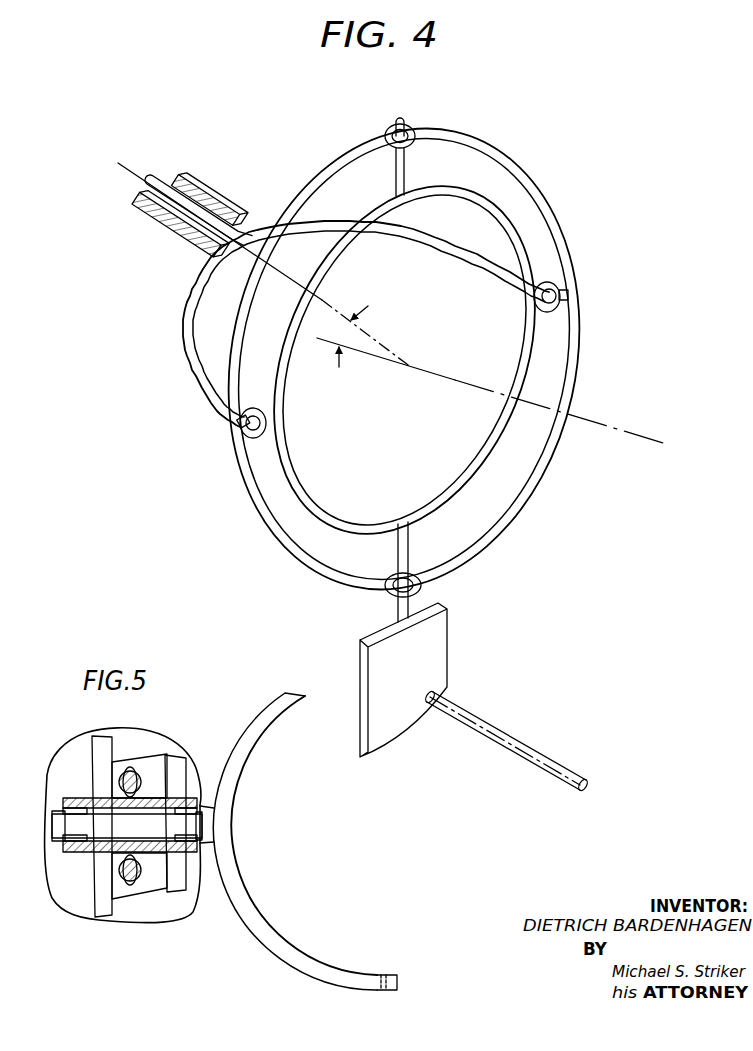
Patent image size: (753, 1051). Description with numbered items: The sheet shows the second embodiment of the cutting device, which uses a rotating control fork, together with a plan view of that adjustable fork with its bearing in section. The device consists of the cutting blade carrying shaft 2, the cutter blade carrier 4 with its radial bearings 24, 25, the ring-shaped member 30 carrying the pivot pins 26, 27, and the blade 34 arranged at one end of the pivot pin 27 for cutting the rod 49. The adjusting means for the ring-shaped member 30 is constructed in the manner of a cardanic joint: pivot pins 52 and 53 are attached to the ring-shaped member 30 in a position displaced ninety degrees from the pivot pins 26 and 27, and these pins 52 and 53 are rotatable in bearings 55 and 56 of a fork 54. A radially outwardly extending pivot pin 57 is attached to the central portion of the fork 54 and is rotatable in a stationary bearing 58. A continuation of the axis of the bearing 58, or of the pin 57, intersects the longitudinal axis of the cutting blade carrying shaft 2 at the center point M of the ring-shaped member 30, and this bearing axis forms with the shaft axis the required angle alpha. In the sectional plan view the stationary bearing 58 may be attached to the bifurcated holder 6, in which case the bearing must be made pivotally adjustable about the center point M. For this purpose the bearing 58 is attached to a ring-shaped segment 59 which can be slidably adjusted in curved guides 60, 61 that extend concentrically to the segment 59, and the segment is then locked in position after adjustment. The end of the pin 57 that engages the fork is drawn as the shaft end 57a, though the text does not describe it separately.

In FIG. 4, the cutting blade carrying shaft 2 is at (633, 432).
In FIG. 4, the cutter blade carrier 4 is at (522, 498).
In FIG. 5, the bifurcated holder 6 is at (80, 747).
In FIG. 4, the radial bearing 24 is at (409, 128).
In FIG. 4, the radial bearing 25 is at (392, 597).
In FIG. 4, the pivot pin 26 is at (398, 173).
In FIG. 4, the pivot pin 27 is at (407, 547).
In FIG. 4, the ring-shaped member 30 is at (294, 496).
In FIG. 4, the blade 34 is at (372, 693).
In FIG. 4, the rod 49 is at (540, 746).
In FIG. 4, the pivot pin 52 is at (246, 429).
In FIG. 4, the pivot pin 53 is at (570, 296).
In FIG. 4, the fork 54 is at (183, 347).
In FIG. 5, the fork 54 is at (236, 872).
In FIG. 4, the bearing 55 is at (267, 409).
In FIG. 5, the bearing 55 is at (382, 990).
In FIG. 4, the bearing 56 is at (546, 312).
In FIG. 4, the pivot pin 57 is at (247, 233).
In FIG. 5, the pivot pin 57 is at (97, 820).
In FIG. 5, the shaft end 57a is at (212, 820).
In FIG. 4, the stationary bearing 58 is at (212, 198).
In FIG. 5, the stationary bearing 58 is at (177, 800).
In FIG. 5, the ring-shaped segment 59 is at (115, 763).
In FIG. 5, the curved guide 60 is at (102, 742).
In FIG. 5, the curved guide 61 is at (173, 883).
In FIG. 4, the center point M is at (411, 367).